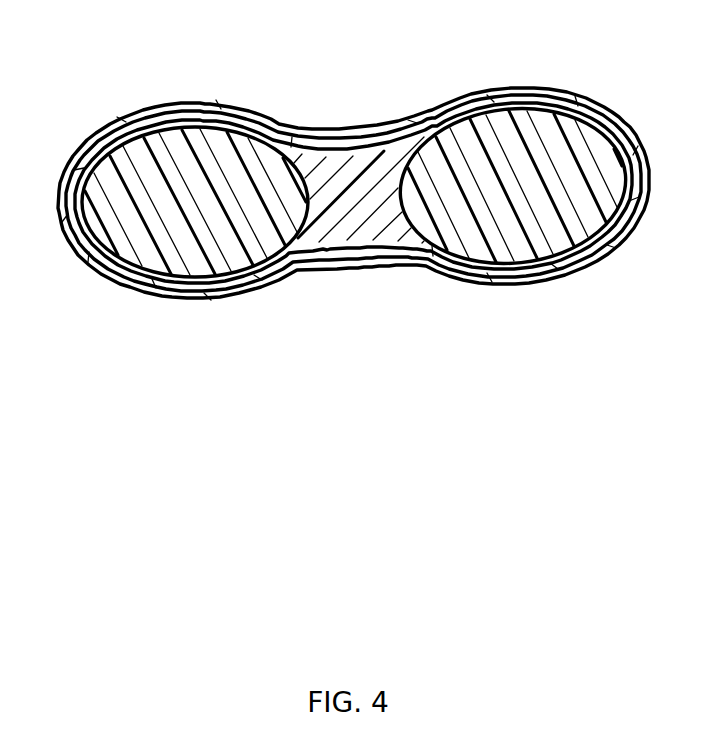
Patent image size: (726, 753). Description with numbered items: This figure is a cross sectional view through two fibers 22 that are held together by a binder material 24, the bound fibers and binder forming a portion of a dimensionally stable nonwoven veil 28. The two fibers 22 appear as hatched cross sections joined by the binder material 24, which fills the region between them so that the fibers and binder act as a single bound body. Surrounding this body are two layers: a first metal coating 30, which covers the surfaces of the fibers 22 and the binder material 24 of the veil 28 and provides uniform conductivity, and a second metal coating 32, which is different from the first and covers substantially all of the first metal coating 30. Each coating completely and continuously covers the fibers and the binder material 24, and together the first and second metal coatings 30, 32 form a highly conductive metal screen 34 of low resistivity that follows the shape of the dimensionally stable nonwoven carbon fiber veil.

The fibers 22 is at (148, 143).
The binder material 24 is at (320, 163).
The dimensionally stable nonwoven veil 28 is at (374, 232).
The first metal coating 30 is at (274, 124).
The second metal coating 32 is at (522, 96).
The highly conductive metal screen 34 is at (353, 257).